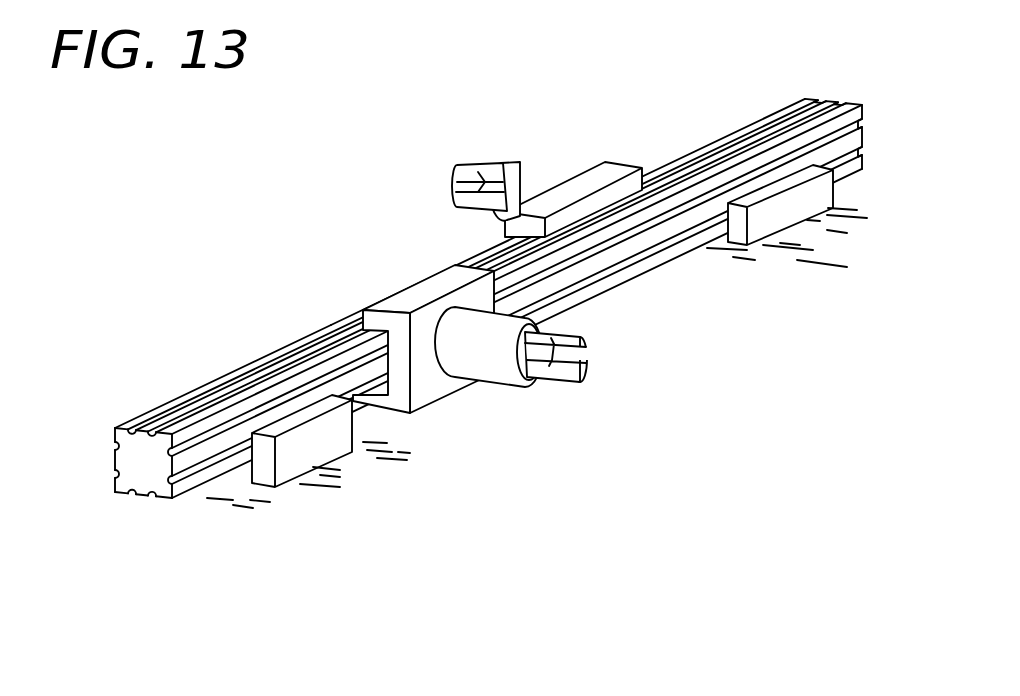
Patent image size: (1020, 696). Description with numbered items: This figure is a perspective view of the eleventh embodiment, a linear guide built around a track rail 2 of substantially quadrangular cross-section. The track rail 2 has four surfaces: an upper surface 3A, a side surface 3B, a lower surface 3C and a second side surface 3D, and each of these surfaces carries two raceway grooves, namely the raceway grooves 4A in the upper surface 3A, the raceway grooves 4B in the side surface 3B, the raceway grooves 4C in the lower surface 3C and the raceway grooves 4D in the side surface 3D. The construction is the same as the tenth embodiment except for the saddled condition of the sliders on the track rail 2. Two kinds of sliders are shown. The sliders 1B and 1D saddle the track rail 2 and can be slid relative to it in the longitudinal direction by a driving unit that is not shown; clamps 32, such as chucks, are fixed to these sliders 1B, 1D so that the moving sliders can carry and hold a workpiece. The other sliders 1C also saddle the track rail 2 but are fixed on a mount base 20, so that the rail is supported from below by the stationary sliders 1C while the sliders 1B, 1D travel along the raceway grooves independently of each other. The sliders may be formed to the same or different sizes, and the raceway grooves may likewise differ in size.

The track rail 2 is at (451, 298).
The upper surface 3A is at (292, 360).
The side surface 3B is at (620, 248).
The lower surface 3C is at (142, 499).
The side surface 3D is at (113, 460).
The raceway grooves 4A is at (745, 155).
The raceway grooves 4B is at (682, 225).
The raceway grooves 4C is at (133, 497).
The raceway grooves 4D is at (112, 444).
The slider 1B is at (420, 297).
The slider 1C is at (330, 440).
The slider 1D is at (607, 177).
The clamp 32 is at (494, 362).
The mount base 20 is at (258, 512).